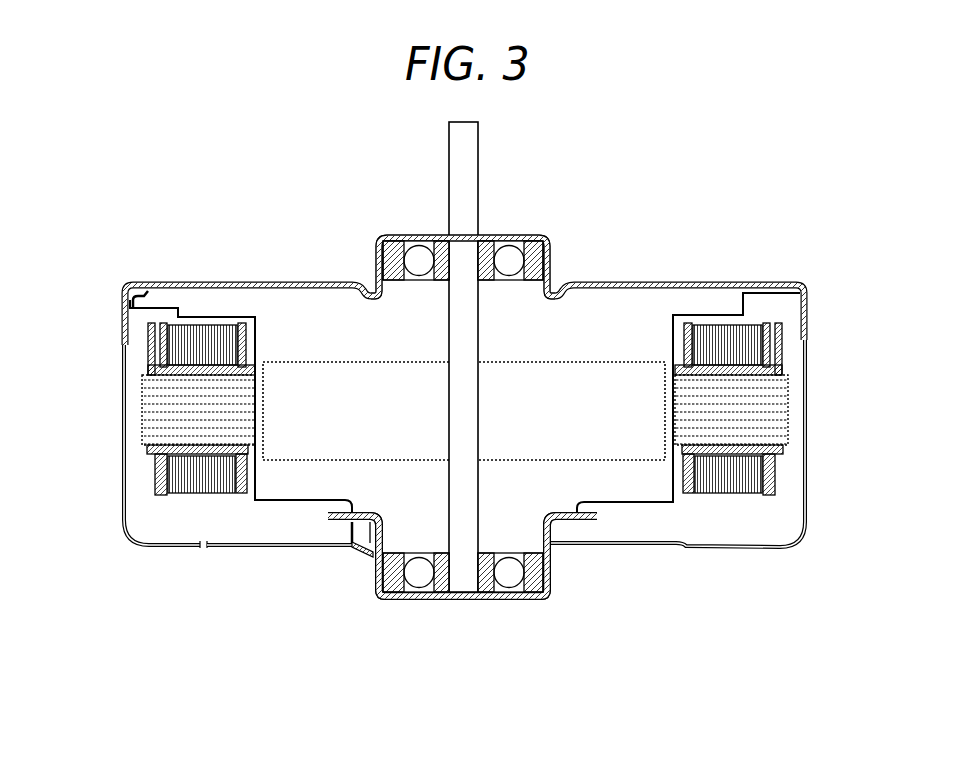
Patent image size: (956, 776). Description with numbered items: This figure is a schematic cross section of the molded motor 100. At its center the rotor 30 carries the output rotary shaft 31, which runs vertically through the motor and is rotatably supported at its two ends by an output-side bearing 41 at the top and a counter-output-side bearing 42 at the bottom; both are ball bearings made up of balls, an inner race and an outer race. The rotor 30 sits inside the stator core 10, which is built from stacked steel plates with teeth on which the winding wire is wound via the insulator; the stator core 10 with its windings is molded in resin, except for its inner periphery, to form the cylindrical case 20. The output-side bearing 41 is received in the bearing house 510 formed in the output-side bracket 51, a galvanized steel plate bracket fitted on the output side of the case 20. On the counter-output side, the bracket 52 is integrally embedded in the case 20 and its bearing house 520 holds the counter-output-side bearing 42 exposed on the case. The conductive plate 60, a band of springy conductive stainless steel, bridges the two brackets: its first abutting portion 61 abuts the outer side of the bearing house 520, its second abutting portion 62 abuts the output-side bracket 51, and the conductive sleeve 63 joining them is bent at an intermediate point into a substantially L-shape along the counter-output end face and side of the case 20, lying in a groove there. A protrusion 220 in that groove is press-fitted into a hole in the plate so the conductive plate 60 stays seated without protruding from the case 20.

The molded motor 100 is at (705, 185).
The stator core 10 is at (140, 417).
The case 20 is at (788, 478).
The rotor 30 is at (595, 340).
The output rotary shaft 31 is at (468, 138).
The output-side bearing 41 is at (486, 238).
The counter-output-side bearing 42 is at (492, 546).
The output-side bracket 51 is at (786, 283).
The output-side bearing house 510 is at (551, 237).
The counter-output-side bracket 52 is at (592, 521).
The counter-output-side bearing house 520 is at (562, 608).
The conductive plate 60 is at (128, 548).
The first abutting portion 61 is at (356, 547).
The second abutting portion 62 is at (138, 300).
The conductive sleeve 63 is at (122, 527).
The protrusion 220 is at (204, 548).